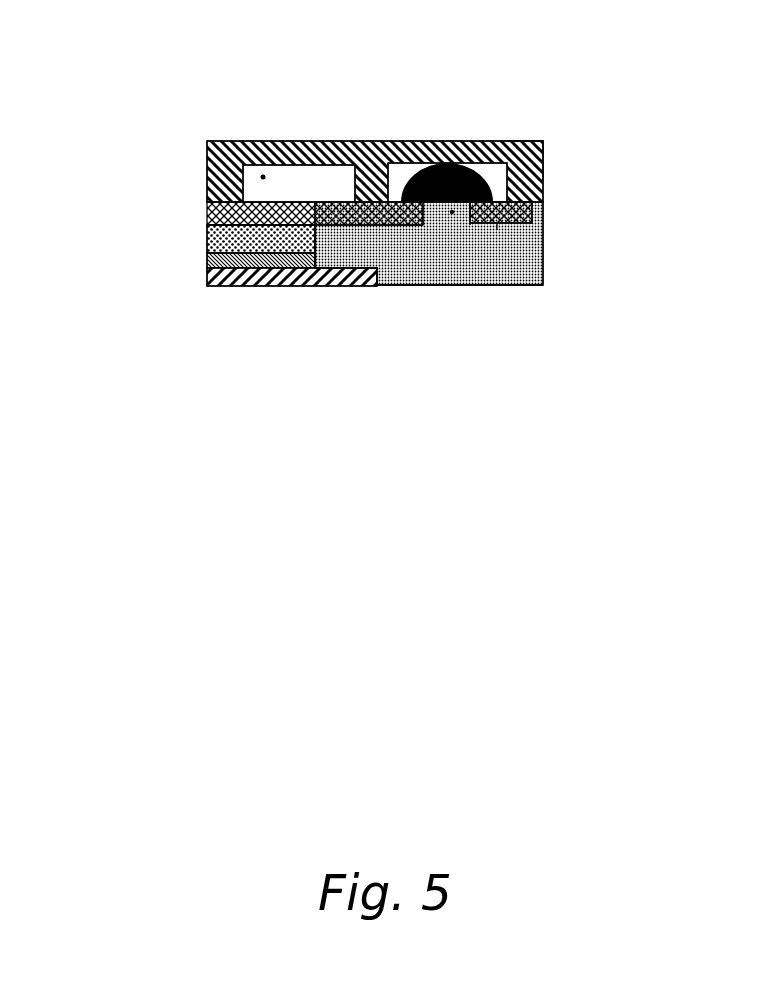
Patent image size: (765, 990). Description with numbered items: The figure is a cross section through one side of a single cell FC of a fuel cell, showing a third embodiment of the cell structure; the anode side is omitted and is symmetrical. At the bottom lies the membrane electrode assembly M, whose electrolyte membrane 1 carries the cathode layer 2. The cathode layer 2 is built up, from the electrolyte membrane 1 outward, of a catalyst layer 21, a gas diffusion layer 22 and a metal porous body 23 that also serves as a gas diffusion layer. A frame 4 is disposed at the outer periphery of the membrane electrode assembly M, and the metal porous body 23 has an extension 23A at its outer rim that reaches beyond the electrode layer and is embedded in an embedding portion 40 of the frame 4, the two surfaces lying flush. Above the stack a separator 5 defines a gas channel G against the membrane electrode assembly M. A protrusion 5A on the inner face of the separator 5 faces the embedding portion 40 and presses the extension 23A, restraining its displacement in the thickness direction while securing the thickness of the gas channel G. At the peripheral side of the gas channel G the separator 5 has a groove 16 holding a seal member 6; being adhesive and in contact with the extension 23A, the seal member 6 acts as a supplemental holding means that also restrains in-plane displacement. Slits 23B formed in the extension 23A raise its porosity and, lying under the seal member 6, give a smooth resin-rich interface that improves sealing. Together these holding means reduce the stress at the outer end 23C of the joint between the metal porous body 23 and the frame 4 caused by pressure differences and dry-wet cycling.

The electrolyte membrane 1 is at (362, 286).
The cathode layer 2 is at (271, 205).
The frame 4 is at (540, 260).
The separator 5 is at (490, 173).
The protrusion 5A is at (355, 178).
The seal member 6 is at (490, 187).
The groove 16 is at (544, 141).
The catalyst layer 21 is at (217, 243).
The gas diffusion layer 22 is at (206, 238).
The metal porous body 23 is at (206, 208).
The extension 23A is at (402, 180).
The slits 23B is at (452, 212).
The outer end 23C is at (543, 212).
The embedding portion 40 is at (497, 228).
The single cell FC is at (372, 122).
The gas channel G is at (263, 176).
The membrane electrode assembly M is at (206, 287).